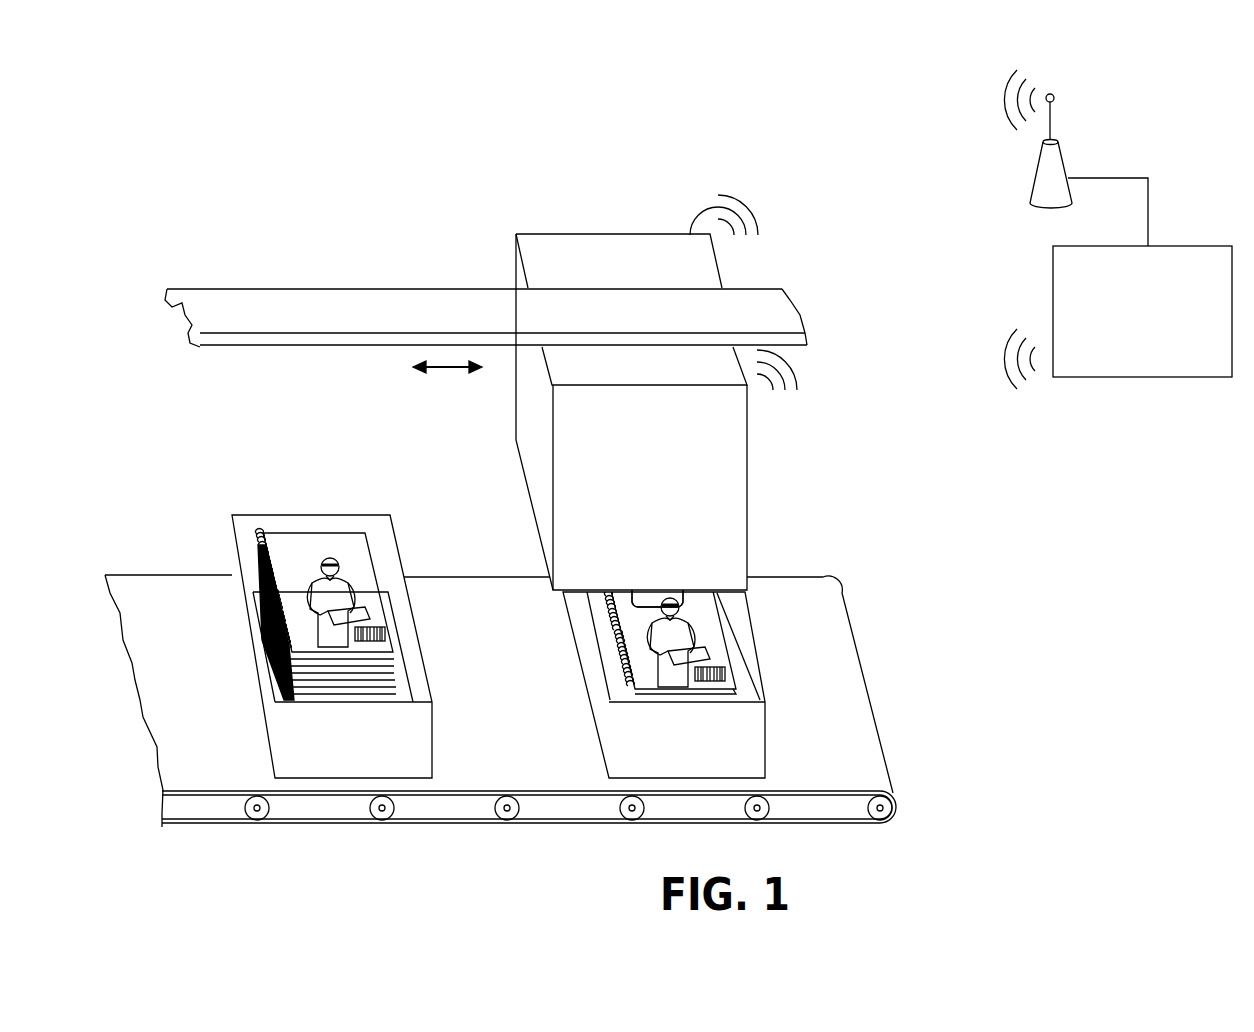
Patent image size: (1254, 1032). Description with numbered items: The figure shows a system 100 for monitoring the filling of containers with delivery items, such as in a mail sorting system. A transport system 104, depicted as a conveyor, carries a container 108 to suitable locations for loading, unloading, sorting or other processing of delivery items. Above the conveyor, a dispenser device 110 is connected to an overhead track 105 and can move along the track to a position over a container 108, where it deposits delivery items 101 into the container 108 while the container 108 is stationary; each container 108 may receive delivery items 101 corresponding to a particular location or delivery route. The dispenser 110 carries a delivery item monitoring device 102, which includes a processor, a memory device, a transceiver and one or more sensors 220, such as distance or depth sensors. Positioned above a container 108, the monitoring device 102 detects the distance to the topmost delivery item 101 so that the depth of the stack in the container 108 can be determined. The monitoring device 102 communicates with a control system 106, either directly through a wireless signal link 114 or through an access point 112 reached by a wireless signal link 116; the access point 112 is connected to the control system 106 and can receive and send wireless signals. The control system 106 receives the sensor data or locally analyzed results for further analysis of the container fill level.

The system 100 is at (310, 123).
The delivery items 101 is at (360, 558).
The delivery item monitoring device 102 is at (653, 598).
The sensors 220 is at (653, 598).
The transport system 104 is at (840, 680).
The overhead track system 105 is at (322, 300).
The control system 106 is at (1130, 350).
The container 108 is at (337, 762).
The dispenser device 110 is at (636, 470).
The access point 112 is at (1063, 155).
The wireless signal link 114 is at (800, 378).
The wireless signal link 116 is at (748, 213).